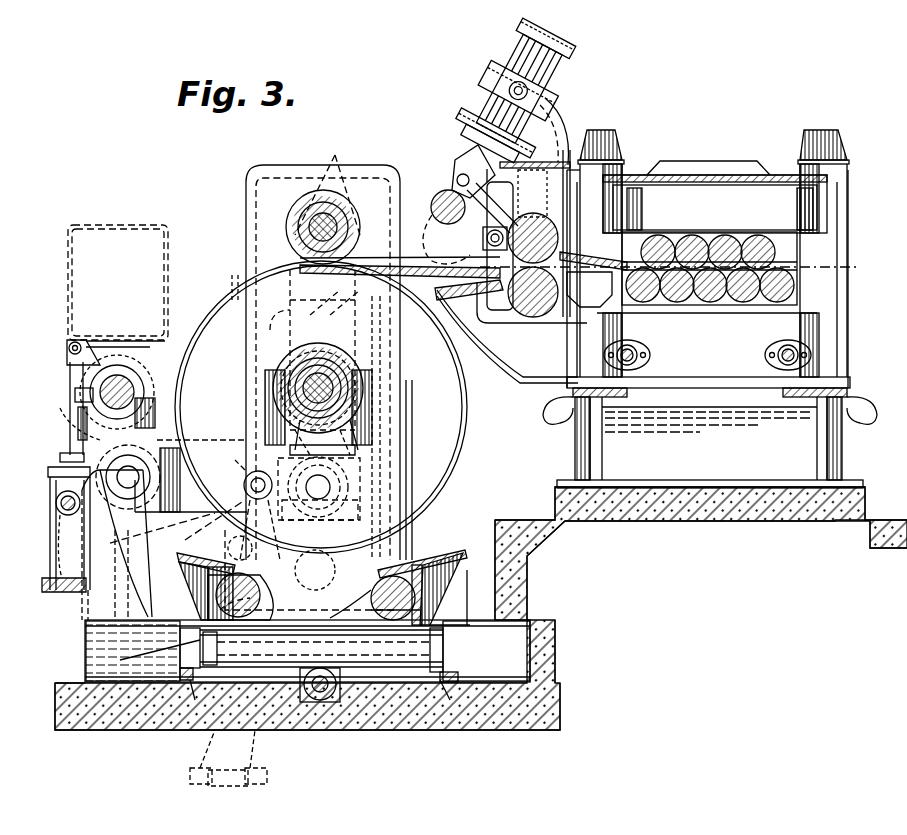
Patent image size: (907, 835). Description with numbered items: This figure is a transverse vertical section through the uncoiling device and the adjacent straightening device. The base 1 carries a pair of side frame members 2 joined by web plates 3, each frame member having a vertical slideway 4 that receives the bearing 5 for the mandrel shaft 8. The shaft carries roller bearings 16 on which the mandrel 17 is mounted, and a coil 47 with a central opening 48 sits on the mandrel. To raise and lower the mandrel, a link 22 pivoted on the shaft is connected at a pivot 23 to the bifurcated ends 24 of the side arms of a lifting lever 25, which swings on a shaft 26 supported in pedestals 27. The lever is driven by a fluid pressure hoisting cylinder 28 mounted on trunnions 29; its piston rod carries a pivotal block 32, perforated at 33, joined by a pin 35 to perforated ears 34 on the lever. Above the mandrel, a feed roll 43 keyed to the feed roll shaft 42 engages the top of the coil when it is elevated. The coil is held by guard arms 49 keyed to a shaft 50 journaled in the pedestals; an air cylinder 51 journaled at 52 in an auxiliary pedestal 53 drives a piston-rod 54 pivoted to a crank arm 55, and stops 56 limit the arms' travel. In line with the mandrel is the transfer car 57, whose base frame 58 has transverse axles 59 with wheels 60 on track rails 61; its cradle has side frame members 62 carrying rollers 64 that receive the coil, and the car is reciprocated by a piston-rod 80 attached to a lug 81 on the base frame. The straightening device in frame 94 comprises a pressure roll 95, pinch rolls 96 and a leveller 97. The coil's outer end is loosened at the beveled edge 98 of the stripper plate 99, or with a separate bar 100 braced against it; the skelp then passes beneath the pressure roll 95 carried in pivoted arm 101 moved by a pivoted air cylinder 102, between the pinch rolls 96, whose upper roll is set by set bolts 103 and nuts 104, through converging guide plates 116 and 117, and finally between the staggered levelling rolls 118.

The base 1 is at (530, 660).
The side frame members 2 is at (246, 192).
The web plates 3 is at (327, 188).
The vertical slideway 4 is at (288, 322).
The bearing 5 is at (358, 415).
The mandrel shaft 8 is at (340, 372).
The roller bearings 16 is at (285, 385).
The mandrel 17 is at (345, 315).
The link 22 is at (335, 440).
The pivot 23 is at (350, 448).
The bifurcated ends 24 is at (342, 470).
The lifting lever 25 is at (135, 525).
The shaft 26 is at (135, 475).
The pedestals 27 is at (60, 455).
The fluid pressure hoisting cylinder 28 is at (205, 745).
The trunnions 29 is at (208, 610).
The pivotal block 32 is at (255, 555).
The perforation 33 is at (240, 540).
The perforated ears 34 is at (318, 518).
The pin 35 is at (257, 502).
The feed roll shaft 42 is at (310, 230).
The feed roll 43 is at (340, 232).
The coil 47 is at (228, 310).
The central opening 48 is at (380, 385).
The guard arms 49 is at (232, 290).
The shaft 50 is at (119, 382).
The air cylinder 51 is at (56, 550).
The trunnion journals 52 is at (56, 506).
The auxiliary pedestal 53 is at (95, 595).
The piston-rod 54 is at (70, 362).
The crank arm 55 is at (85, 352).
The stops 56 is at (75, 390).
The transfer car 57 is at (430, 592).
The base frame 58 is at (150, 660).
The transverse axles 59 is at (445, 690).
The wheels 60 is at (100, 652).
The track rails 61 is at (200, 690).
The cradle side frame members 62 is at (348, 612).
The rollers 64 is at (180, 566).
The piston-rod 80 is at (330, 700).
The lug 81 is at (315, 705).
The frame 94 is at (840, 325).
The pressure roll 95 is at (455, 178).
The pinch rolls 96 is at (560, 275).
The leveller 97 is at (760, 238).
The beveled edge 98 is at (400, 276).
The stripper plate 99 is at (445, 295).
The bar 100 is at (435, 295).
The pivoted arm 101 is at (440, 195).
The pivoted air cylinder 102 is at (555, 80).
The set bolts 103 is at (560, 103).
The nuts 104 is at (562, 122).
The converging guide plate 116 is at (628, 262).
The converging guide plate 117 is at (640, 275).
The levelling rolls 118 is at (700, 238).